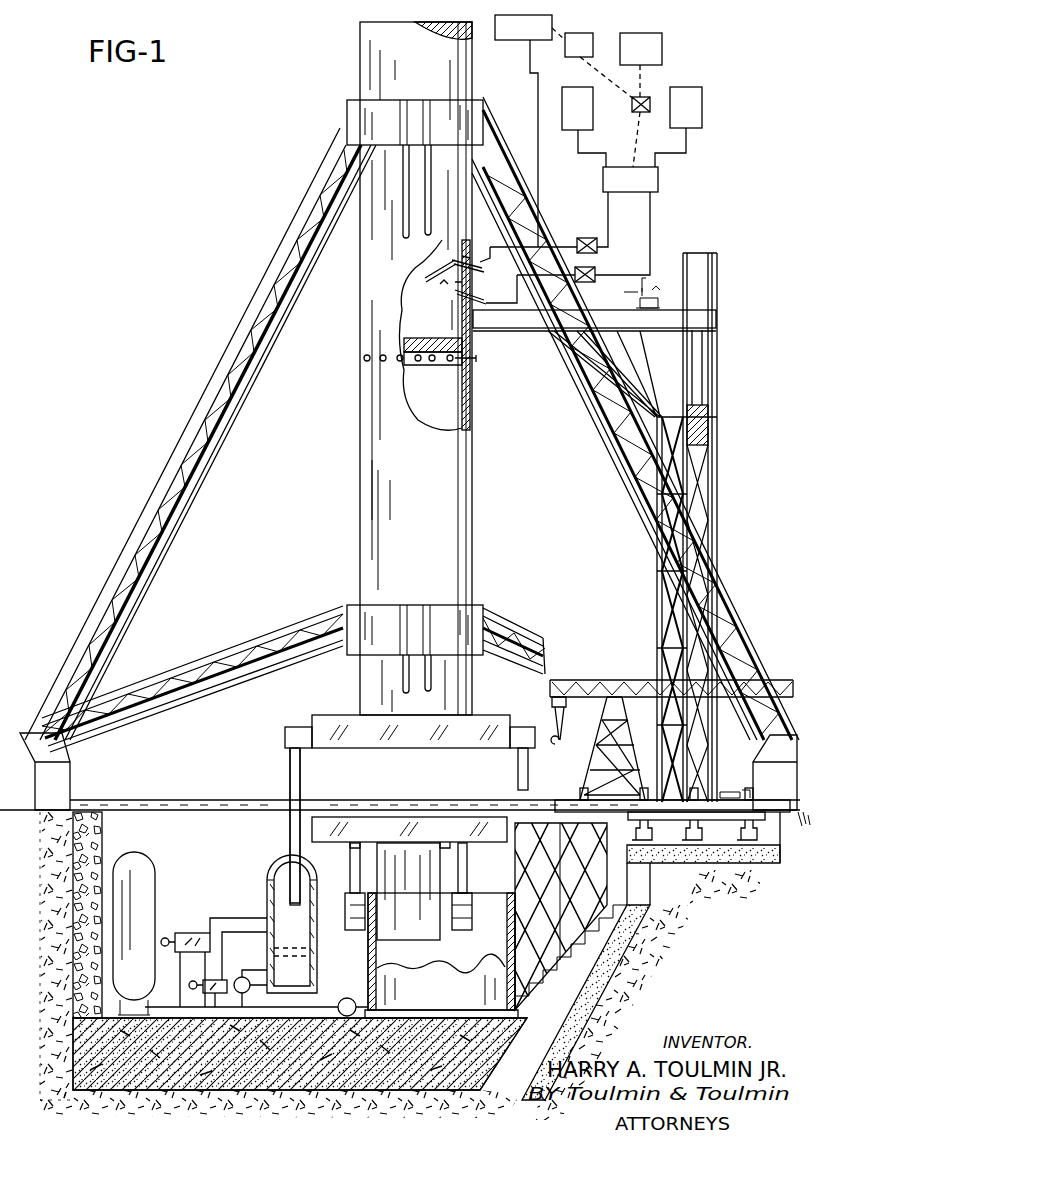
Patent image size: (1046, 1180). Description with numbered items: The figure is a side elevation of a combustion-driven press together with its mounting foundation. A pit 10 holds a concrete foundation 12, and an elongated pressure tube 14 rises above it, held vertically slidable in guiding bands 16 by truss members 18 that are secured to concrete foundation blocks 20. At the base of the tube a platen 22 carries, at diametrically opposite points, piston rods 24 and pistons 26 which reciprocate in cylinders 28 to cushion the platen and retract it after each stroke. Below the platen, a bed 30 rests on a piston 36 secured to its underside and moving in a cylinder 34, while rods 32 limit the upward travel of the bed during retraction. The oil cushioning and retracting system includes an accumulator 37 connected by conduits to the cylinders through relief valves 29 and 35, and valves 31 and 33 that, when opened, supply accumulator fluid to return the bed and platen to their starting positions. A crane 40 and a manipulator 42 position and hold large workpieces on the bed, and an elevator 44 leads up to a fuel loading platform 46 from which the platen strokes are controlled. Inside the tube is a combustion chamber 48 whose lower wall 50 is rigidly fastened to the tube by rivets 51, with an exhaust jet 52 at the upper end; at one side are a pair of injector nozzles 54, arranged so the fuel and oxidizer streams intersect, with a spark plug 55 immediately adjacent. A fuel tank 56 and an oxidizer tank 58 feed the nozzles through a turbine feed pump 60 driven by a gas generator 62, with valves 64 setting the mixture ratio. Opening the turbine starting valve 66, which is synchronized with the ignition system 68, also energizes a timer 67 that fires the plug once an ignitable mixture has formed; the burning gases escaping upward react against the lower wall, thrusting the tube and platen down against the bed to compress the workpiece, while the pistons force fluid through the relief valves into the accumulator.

The pit 10 is at (238, 1104).
The concrete foundation 12 is at (340, 1100).
The pressure tube 14 is at (370, 437).
The guiding bands 16 is at (376, 108).
The truss members 18 is at (170, 532).
The concrete foundation blocks 20 is at (62, 790).
The platen 22 is at (438, 744).
The piston rods 24 is at (288, 773).
The pistons 26 is at (288, 884).
The cylinders 28 is at (266, 902).
The relief valve 29 is at (244, 976).
The bed 30 is at (356, 826).
The valve 31 is at (180, 932).
The rods 32 is at (352, 862).
The valve 33 is at (210, 988).
The cylinder 34 is at (438, 983).
The relief valve 35 is at (346, 997).
The piston 36 is at (438, 928).
The accumulator 37 is at (140, 882).
The crane 40 is at (596, 682).
The manipulator 42 is at (702, 822).
The elevator 44 is at (712, 544).
The fuel loading platform 46 is at (526, 330).
The combustion chamber 48 is at (445, 330).
The lower wall 50 is at (452, 380).
The rivets 51 is at (470, 359).
The exhaust jet 52 is at (436, 28).
The injector nozzles 54 is at (462, 262).
The spark plug 55 is at (424, 278).
The fuel tank 56 is at (703, 108).
The oxidizer tank 58 is at (570, 128).
The turbine feed pump 60 is at (658, 182).
The gas generator 62 is at (662, 46).
The valves 64 is at (586, 238).
The turbine starting valve 66 is at (632, 108).
The timer 67 is at (576, 34).
The ignition system 68 is at (520, 40).